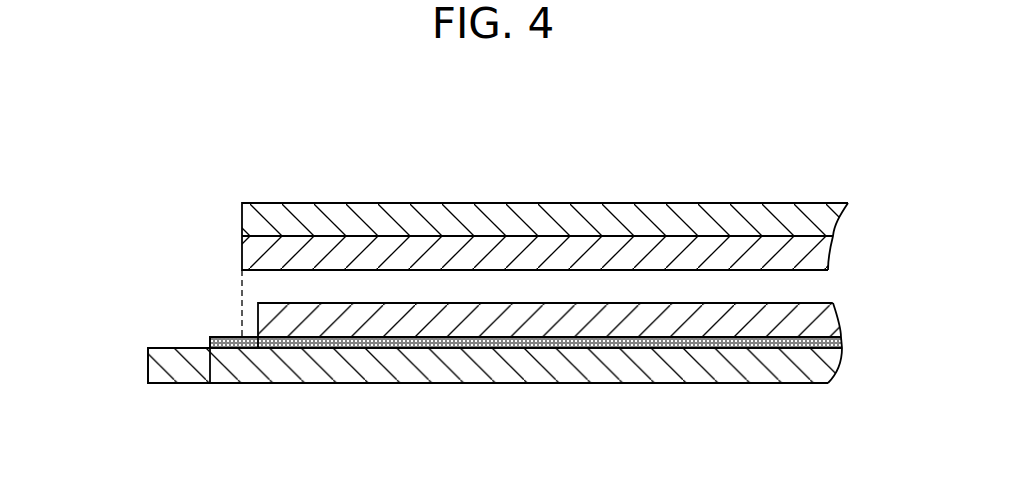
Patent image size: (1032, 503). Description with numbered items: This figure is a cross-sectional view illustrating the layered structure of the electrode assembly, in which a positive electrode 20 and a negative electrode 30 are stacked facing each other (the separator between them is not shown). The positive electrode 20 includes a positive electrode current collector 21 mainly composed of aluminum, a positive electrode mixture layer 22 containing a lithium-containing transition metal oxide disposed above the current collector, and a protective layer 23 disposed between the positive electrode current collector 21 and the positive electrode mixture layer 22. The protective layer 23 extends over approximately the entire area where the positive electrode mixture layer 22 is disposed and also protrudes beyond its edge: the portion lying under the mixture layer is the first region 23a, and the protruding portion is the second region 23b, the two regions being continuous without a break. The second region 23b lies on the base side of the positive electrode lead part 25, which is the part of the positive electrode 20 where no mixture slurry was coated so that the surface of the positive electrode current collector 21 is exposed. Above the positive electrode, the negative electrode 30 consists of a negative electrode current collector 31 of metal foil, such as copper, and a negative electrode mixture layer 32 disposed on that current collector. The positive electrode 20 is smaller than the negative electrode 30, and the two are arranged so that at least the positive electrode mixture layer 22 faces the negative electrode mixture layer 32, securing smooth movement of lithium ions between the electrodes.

The positive electrode 20 is at (148, 367).
The positive electrode current collector 21 is at (463, 370).
The positive electrode mixture layer 22 is at (510, 328).
The protective layer 23 is at (706, 343).
The first region 23a is at (323, 349).
The second region 23b is at (233, 336).
The positive electrode lead part 25 is at (178, 360).
The negative electrode 30 is at (240, 220).
The negative electrode current collector 31 is at (440, 219).
The negative electrode mixture layer 32 is at (498, 248).